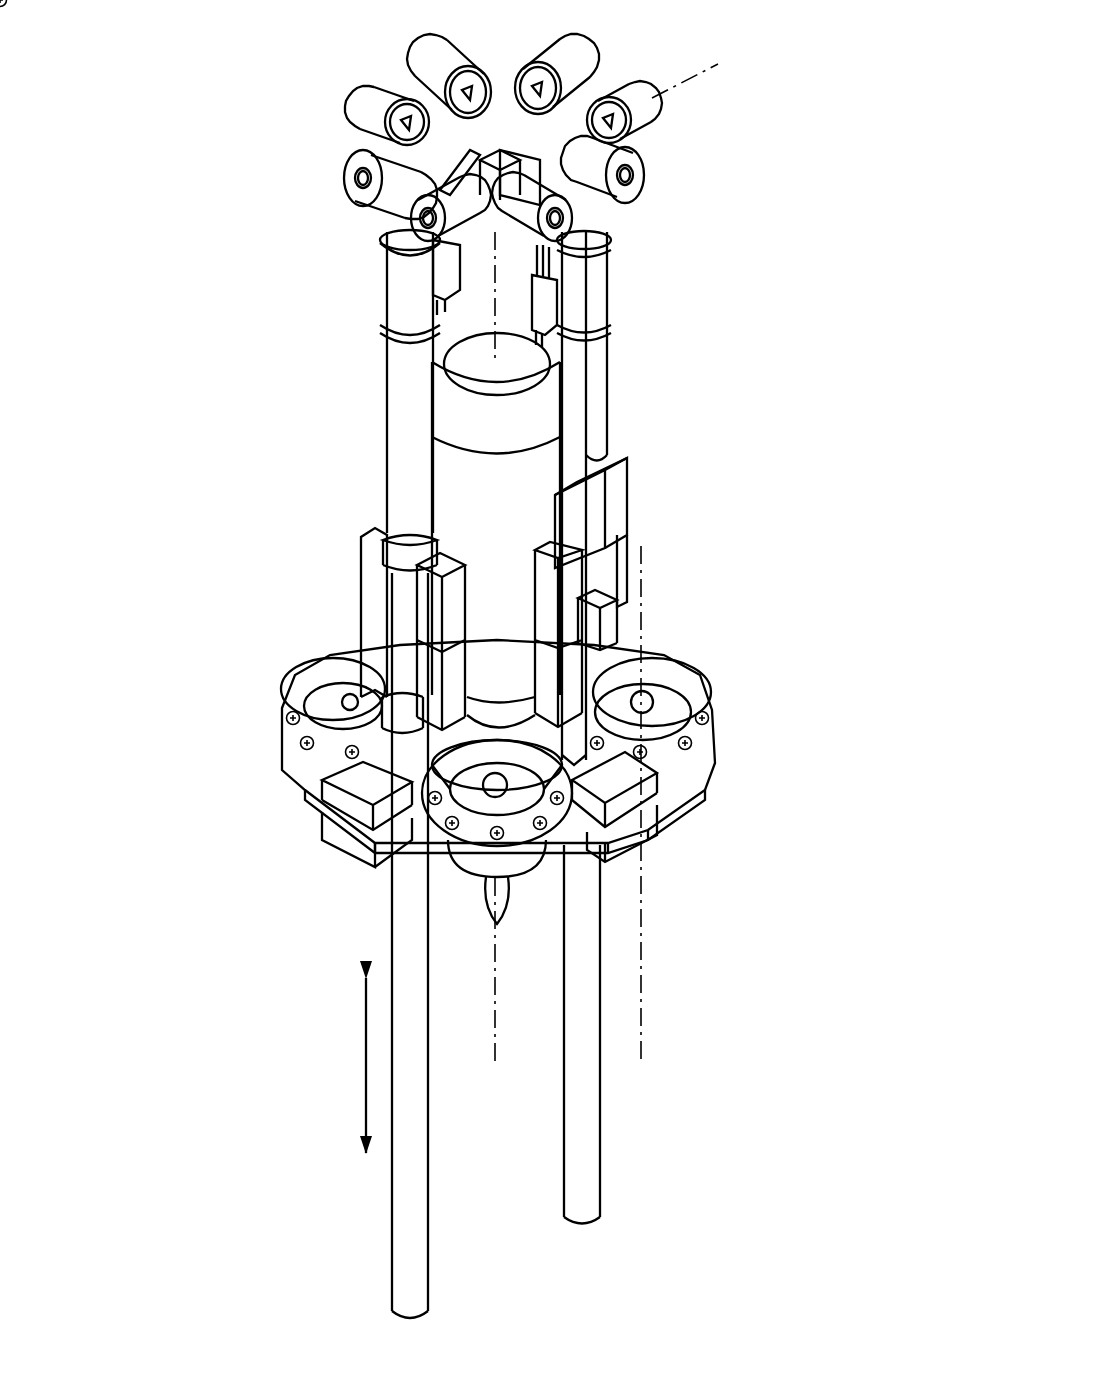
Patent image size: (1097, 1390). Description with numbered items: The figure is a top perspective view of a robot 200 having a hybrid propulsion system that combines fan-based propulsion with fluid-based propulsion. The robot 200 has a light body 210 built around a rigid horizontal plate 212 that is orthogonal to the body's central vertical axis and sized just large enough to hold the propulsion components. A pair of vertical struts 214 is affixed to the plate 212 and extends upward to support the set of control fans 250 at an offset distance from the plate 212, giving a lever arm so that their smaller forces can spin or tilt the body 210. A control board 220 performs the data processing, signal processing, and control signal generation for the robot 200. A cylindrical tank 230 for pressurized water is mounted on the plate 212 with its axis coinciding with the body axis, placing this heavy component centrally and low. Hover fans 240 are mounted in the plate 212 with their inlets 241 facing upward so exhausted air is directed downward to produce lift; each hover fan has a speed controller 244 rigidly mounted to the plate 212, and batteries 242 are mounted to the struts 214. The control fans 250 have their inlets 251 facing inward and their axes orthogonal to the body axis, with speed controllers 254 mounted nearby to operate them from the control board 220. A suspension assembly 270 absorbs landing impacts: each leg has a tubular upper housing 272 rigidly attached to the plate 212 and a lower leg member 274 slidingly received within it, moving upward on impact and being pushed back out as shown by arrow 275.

The robot 200 is at (278, 195).
The body 210 is at (284, 770).
The plate 212 is at (304, 788).
The vertical struts 214 is at (575, 878).
The control board 220 is at (624, 498).
The cylindrical tank 230 is at (548, 372).
The hover fans 240 is at (720, 709).
The inlets 241 is at (690, 662).
The batteries 242 is at (357, 577).
The speed controller 244 is at (656, 843).
The control fans 250 is at (652, 173).
The inlets 251 is at (612, 92).
The speed controllers 254 is at (436, 276).
The suspension assembly 270 is at (388, 366).
The upper housing 272 is at (397, 400).
The lower leg member 274 is at (406, 1207).
The arrow 275 is at (364, 1040).